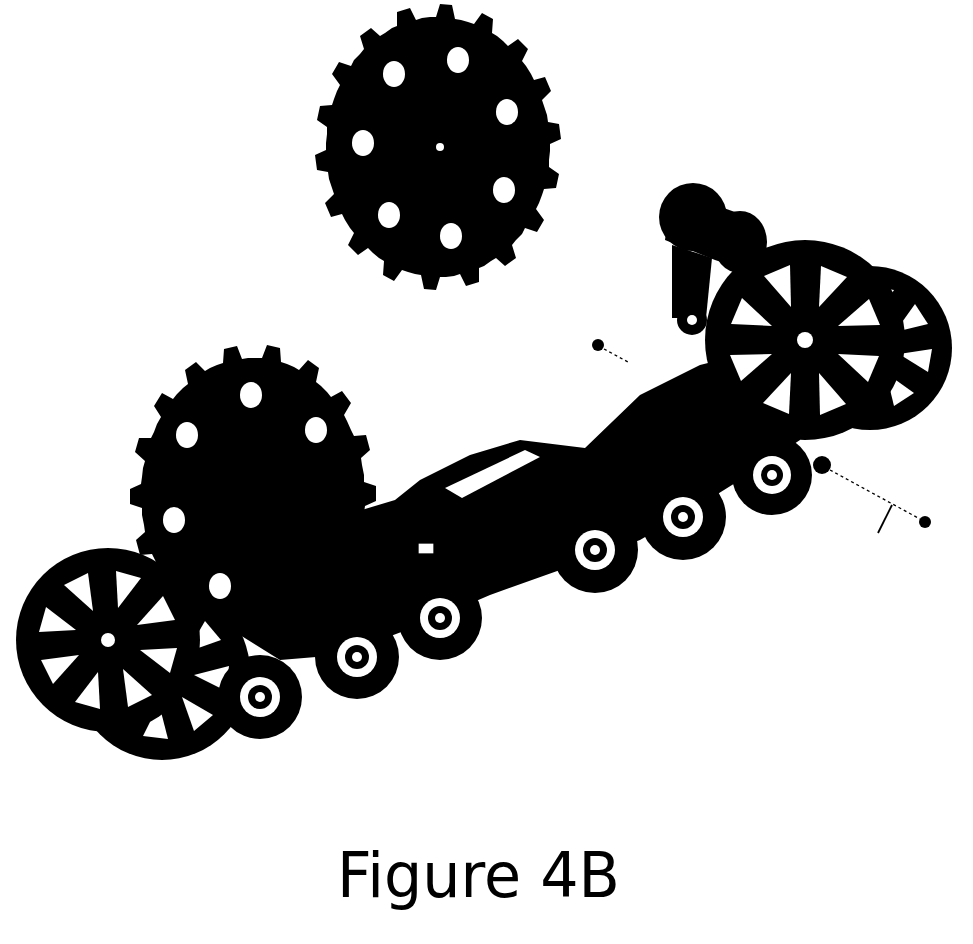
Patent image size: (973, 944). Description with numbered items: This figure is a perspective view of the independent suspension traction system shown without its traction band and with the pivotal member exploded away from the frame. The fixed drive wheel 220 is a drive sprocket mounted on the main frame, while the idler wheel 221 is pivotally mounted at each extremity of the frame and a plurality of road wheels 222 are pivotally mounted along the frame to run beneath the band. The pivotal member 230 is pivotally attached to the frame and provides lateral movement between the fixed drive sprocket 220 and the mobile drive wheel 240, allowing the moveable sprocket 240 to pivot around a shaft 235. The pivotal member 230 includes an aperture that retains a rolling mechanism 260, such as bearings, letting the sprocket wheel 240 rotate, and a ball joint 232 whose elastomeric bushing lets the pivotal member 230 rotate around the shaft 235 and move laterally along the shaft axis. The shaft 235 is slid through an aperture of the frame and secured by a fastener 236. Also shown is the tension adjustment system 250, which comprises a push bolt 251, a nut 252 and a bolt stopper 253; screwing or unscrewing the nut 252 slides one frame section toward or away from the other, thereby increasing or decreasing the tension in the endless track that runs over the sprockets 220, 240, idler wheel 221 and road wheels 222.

The fixed drive wheel 220 is at (160, 418).
The idler wheel 221 is at (63, 575).
The road wheels 222 is at (362, 705).
The pivotal member 230 is at (706, 197).
The ball joint 232 is at (662, 312).
The shaft 235 is at (887, 512).
The fastener 236 is at (592, 342).
The mobile drive wheel 240 is at (300, 172).
The tension adjustment system 250 is at (493, 452).
The push bolt 251 is at (525, 572).
The nut 252 is at (477, 553).
The bolt stopper 253 is at (427, 543).
The rolling mechanism 260 is at (745, 238).